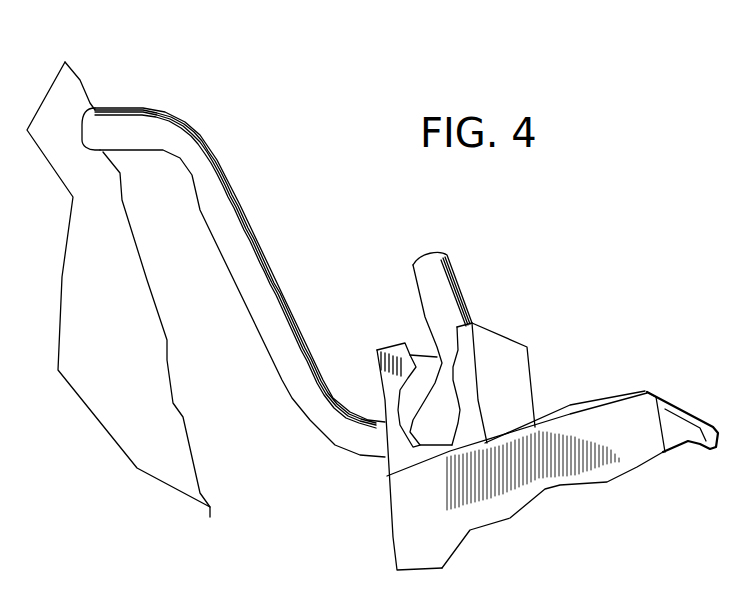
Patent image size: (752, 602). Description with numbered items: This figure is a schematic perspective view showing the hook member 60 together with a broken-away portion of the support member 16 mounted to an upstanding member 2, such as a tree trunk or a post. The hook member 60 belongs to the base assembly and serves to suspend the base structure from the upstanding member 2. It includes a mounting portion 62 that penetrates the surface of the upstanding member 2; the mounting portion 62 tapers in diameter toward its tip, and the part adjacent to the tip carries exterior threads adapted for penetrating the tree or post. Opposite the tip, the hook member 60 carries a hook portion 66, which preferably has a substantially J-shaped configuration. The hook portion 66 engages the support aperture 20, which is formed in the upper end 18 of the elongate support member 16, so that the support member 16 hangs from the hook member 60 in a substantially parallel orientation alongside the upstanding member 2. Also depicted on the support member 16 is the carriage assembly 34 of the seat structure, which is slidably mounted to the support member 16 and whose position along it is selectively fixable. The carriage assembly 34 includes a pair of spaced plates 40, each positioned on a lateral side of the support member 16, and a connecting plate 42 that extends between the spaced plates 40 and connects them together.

The upstanding member 2 is at (68, 78).
The mounting portion 62 is at (145, 118).
The hook member 60 is at (200, 133).
The hook portion 66 is at (242, 248).
The upper end 18 is at (513, 350).
The support member 16 is at (507, 388).
The support aperture 20 is at (417, 450).
The connecting plate 42 is at (393, 535).
The carriage assembly 34 is at (510, 497).
The spaced plates 40 is at (442, 538).